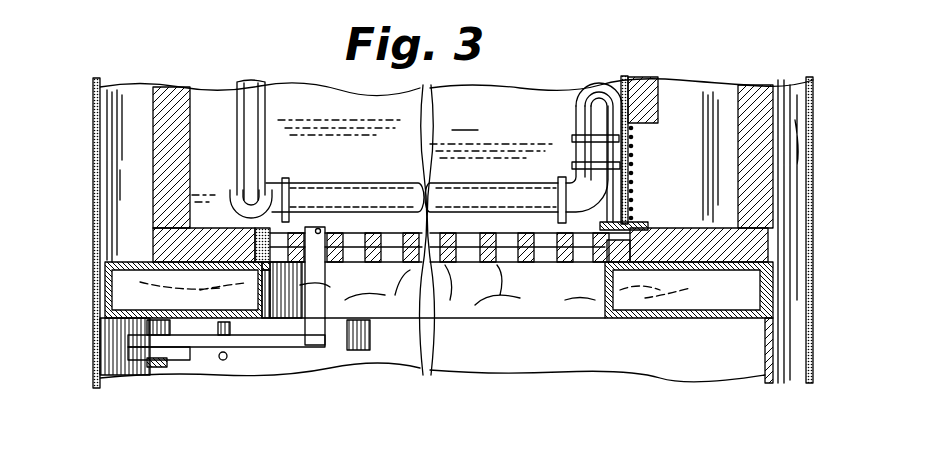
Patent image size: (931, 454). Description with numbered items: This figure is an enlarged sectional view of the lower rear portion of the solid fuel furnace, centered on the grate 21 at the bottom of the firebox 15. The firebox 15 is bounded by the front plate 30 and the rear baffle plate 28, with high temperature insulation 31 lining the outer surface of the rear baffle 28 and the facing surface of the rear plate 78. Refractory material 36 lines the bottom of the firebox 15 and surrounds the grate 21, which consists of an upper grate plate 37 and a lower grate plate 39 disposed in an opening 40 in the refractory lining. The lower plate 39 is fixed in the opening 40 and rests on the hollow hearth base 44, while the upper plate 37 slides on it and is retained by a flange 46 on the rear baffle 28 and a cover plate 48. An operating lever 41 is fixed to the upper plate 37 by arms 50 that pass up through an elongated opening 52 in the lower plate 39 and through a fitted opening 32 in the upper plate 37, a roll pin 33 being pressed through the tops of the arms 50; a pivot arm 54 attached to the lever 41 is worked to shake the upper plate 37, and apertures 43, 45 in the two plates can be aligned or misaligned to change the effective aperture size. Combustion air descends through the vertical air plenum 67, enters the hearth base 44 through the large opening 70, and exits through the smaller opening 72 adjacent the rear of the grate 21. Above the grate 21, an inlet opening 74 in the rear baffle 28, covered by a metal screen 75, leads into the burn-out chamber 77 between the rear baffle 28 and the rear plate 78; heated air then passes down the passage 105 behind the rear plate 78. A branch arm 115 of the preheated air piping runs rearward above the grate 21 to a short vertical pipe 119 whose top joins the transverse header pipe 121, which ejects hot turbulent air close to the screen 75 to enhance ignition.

The firebox 15 is at (373, 156).
The grate 21 is at (630, 222).
The rear baffle plate 28 is at (420, 90).
The front plate 30 is at (160, 86).
The high temperature insulation 31 is at (648, 77).
The fitted opening 32 is at (320, 240).
The roll pin 33 is at (300, 232).
The high temperature refractory material 36 is at (228, 236).
The upper grate plate 37 is at (558, 232).
The lower grate plate 39 is at (560, 235).
The opening 40 is at (292, 205).
The operating lever 41 is at (268, 340).
The aperture 43 is at (495, 240).
The hearth base 44 is at (107, 288).
The aperture 45 is at (597, 243).
The flange 46 is at (604, 226).
The cover plate 48 is at (207, 225).
The arm 50 is at (273, 252).
The elongated opening 52 is at (318, 290).
The pivot arm 54 is at (153, 353).
The vertical air plenum 67 is at (122, 197).
The opening 70 is at (108, 268).
The opening 72 is at (605, 298).
The inlet opening 74 is at (603, 113).
The metal screen 75 is at (630, 155).
The burn-out chamber 77 is at (713, 90).
The rear plate 78 is at (763, 287).
The passage 105 is at (792, 190).
The branch arm 115 is at (466, 190).
The vertical pipe 119 is at (578, 152).
The transverse header pipe 121 is at (602, 82).